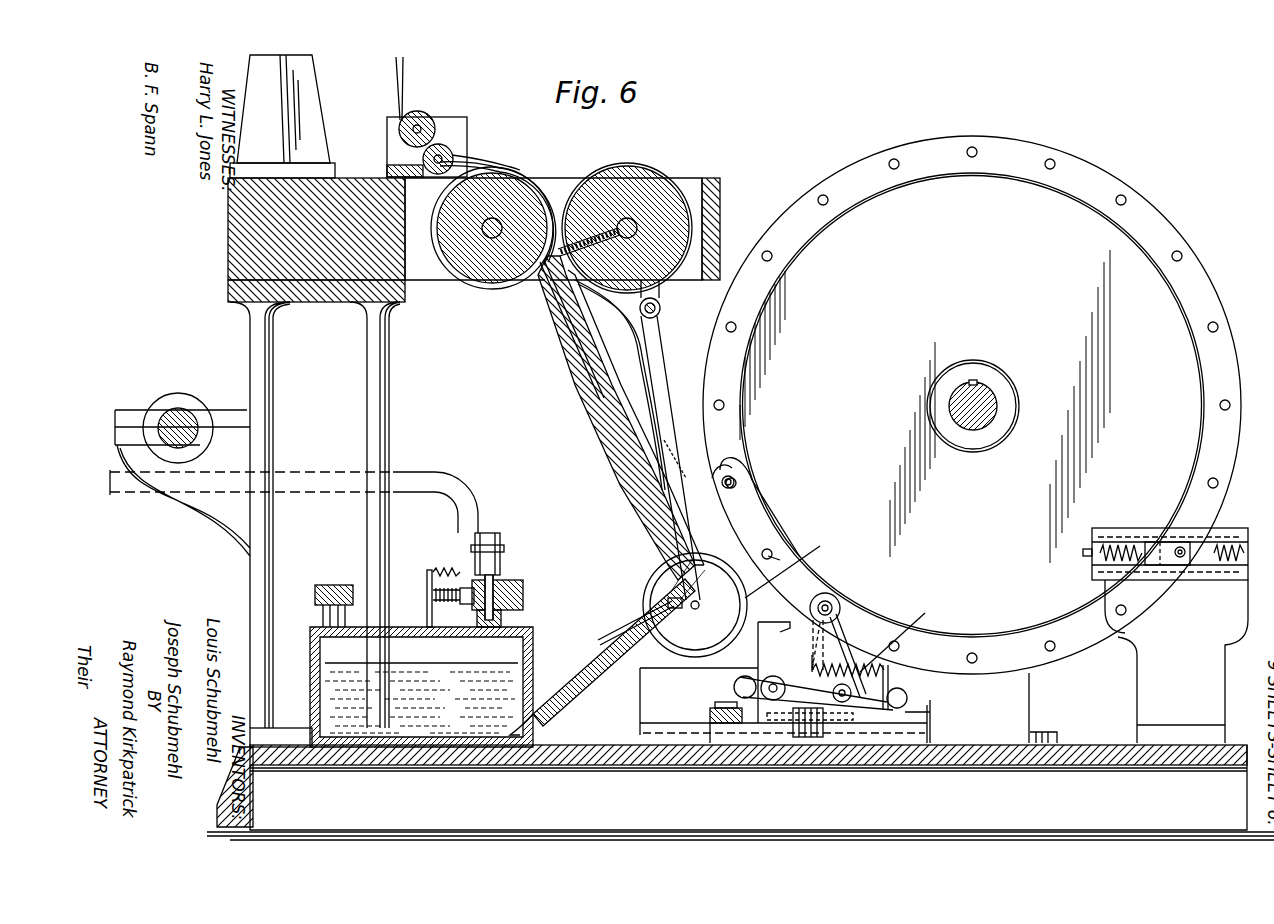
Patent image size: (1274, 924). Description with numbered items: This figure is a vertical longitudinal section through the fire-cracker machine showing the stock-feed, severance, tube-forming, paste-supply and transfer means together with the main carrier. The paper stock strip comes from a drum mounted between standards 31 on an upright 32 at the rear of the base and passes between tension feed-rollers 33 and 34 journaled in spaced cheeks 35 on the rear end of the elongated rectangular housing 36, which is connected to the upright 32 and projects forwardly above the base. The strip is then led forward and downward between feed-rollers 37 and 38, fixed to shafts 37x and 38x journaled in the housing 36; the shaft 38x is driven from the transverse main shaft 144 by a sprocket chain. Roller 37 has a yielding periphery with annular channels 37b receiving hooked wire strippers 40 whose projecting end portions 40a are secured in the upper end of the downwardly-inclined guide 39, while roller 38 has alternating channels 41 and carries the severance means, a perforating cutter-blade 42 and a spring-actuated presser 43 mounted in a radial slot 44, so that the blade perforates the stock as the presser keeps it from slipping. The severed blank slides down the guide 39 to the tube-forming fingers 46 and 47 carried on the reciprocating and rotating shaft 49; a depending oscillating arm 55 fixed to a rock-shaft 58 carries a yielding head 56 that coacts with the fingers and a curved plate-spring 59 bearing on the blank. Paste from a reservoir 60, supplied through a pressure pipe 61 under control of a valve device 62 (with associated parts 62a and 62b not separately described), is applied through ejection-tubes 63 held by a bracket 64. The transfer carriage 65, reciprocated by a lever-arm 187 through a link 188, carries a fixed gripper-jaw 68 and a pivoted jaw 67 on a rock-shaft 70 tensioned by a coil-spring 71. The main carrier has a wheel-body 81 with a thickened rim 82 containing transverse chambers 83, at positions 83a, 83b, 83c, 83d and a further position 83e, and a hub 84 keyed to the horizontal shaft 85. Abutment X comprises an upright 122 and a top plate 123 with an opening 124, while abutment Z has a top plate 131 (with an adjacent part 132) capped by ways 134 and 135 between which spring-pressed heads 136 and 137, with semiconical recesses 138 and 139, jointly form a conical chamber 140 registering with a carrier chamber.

The standards 31 is at (323, 120).
The upright 32 is at (360, 382).
The tension feed-roller 33 is at (430, 122).
The tension feed-roller 34 is at (468, 152).
The spaced cheeks 35 is at (466, 122).
The elongated rectangular housing 36 is at (718, 182).
The feed-roller 37 is at (485, 268).
The circumferential annular channels 37b is at (440, 230).
The shaft 37x is at (491, 244).
The feed-roller 38 is at (672, 282).
The shaft 38x is at (690, 175).
The downwardly-inclined guide 39 is at (592, 405).
The strippers 40 is at (528, 178).
The projecting end portions 40a is at (565, 300).
The circumferential annular channels 41 is at (632, 218).
The perforating cutter-blade 42 is at (603, 280).
The spring-actuated presser 43 is at (560, 225).
The radial slot 44 is at (600, 238).
The finger 46 is at (695, 605).
The finger 47 is at (704, 607).
The shaft 49 is at (718, 638).
The depending oscillating arm 55 is at (680, 437).
The yielding head 56 is at (702, 595).
The rock-shaft 58 is at (660, 314).
The curved plate-spring 59 is at (670, 486).
The paste-reservoir 60 is at (370, 640).
The pressure-supply pipe 61 is at (478, 525).
The valve device 62 is at (510, 582).
The pipe fitting 62a is at (470, 565).
The valve spring plate 62b is at (428, 585).
The ejection-tubes 63 is at (620, 600).
The bracket 64 is at (586, 698).
The carriage 65 is at (930, 715).
The gripper-jaw 67 is at (813, 660).
The gripper-jaw 68 is at (840, 665).
The rock-shaft 70 is at (778, 685).
The coil-spring 71 is at (902, 634).
The wheel-body 81 is at (972, 405).
The annular rim 82 is at (1205, 455).
The transverse chambers 83 is at (975, 150).
The chamber position 83a is at (834, 604).
The chamber position 83b is at (770, 548).
The chamber position 83c is at (1188, 560).
The chamber position 83d is at (1126, 613).
The rim hole 83e is at (975, 654).
The central hub 84 is at (1010, 392).
The horizontal shaft 85 is at (980, 430).
The upright 122 is at (775, 625).
The top plate 123 is at (794, 561).
The transverse opening 124 is at (835, 595).
The top plate 131 is at (1192, 661).
The bracket 132 is at (1120, 595).
The way 134 is at (1148, 570).
The way 135 is at (1205, 530).
The spring-pressed head 136 is at (1105, 545).
The spring-pressed head 137 is at (1225, 545).
The semiconical recess 138 is at (1150, 545).
The semiconical recess 139 is at (1180, 565).
The conical chamber 140 is at (1180, 560).
The main shaft 144 is at (210, 560).
The lever-arm 187 is at (710, 712).
The link 188 is at (748, 728).